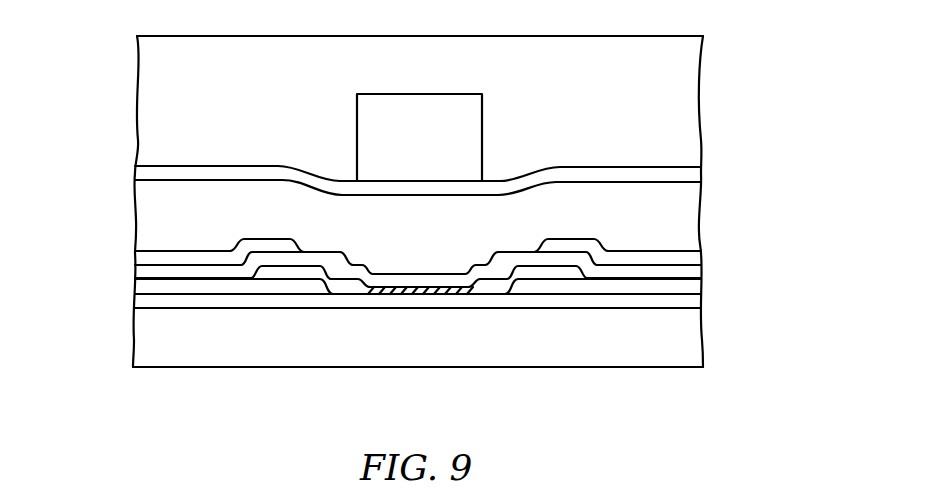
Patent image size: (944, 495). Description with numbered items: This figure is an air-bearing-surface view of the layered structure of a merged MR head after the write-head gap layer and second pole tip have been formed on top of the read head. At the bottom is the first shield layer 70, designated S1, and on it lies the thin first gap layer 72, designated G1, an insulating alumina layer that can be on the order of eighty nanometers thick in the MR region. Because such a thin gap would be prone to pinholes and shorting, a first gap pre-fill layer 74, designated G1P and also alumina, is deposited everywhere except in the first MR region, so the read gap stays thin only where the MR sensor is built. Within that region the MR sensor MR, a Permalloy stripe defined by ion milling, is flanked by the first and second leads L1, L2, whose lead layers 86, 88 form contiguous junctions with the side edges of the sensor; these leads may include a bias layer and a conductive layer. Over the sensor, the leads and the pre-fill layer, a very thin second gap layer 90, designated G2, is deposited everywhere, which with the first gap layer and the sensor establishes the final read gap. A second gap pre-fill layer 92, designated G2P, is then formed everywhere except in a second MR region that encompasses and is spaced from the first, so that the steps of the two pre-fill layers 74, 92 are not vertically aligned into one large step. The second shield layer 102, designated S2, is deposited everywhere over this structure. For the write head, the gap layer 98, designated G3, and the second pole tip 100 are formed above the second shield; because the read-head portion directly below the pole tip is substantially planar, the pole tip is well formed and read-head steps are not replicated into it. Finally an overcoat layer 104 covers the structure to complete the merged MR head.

The first shield layer 70 is at (690, 342).
The first gap layer 72 is at (655, 303).
The first gap pre-fill layer 74 is at (178, 288).
The first lead layer 86 is at (313, 275).
The second lead layer 88 is at (510, 275).
The second gap layer 90 is at (277, 260).
The second gap pre-fill layer 92 is at (172, 258).
The gap layer 98 is at (142, 170).
The second pole tip 100 is at (458, 124).
The second substrate layer S2 102 is at (690, 219).
The overcoat layer 104 is at (683, 88).
The first gap layer G1 is at (139, 308).
The first gap pre-fill layer G1P is at (139, 289).
The second gap layer G2 is at (138, 265).
The second gap pre-fill layer G2P is at (138, 252).
The gap layer G3 is at (700, 177).
The first lead L1 is at (291, 269).
The second lead L2 is at (555, 275).
The MR sensor MR is at (447, 291).
The first shield layer S1 is at (282, 310).
The second shield layer S2 is at (282, 213).